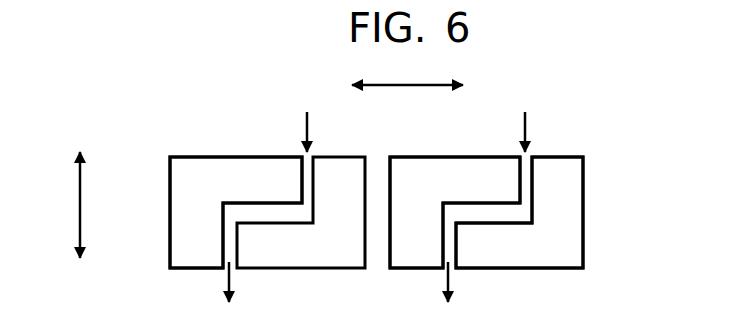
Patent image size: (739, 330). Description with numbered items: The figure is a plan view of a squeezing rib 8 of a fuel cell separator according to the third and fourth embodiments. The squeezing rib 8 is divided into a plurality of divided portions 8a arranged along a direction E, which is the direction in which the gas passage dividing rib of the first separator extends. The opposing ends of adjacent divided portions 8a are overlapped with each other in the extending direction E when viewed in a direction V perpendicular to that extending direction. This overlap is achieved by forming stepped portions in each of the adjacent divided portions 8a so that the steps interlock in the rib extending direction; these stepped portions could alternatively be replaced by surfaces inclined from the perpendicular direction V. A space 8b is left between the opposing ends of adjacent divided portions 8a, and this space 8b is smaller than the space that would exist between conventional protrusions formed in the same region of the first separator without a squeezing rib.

The squeezing rib 8 is at (568, 212).
The divided portions 8a is at (199, 168).
The space 8b is at (377, 237).
The extending direction E is at (410, 83).
The perpendicular direction V is at (81, 210).